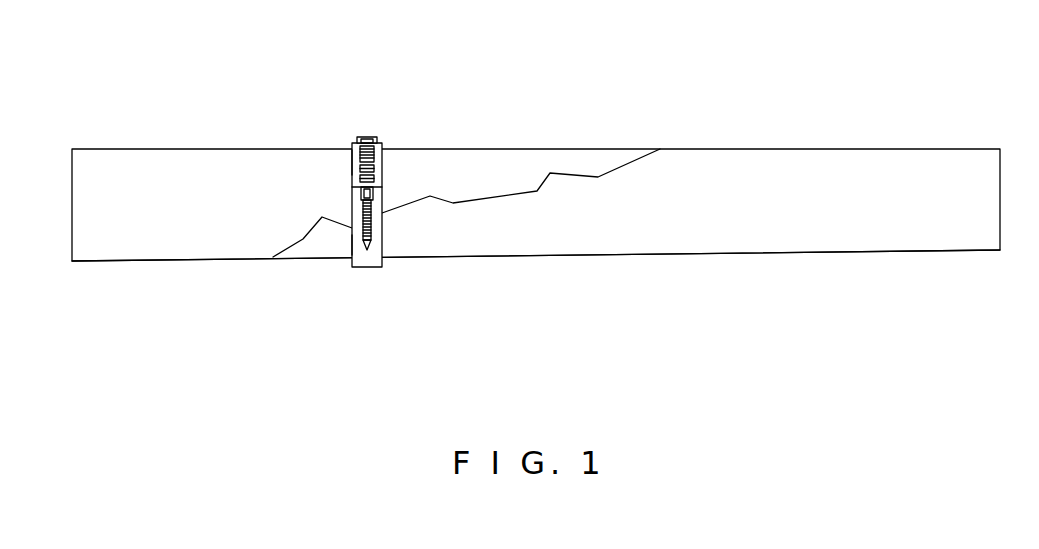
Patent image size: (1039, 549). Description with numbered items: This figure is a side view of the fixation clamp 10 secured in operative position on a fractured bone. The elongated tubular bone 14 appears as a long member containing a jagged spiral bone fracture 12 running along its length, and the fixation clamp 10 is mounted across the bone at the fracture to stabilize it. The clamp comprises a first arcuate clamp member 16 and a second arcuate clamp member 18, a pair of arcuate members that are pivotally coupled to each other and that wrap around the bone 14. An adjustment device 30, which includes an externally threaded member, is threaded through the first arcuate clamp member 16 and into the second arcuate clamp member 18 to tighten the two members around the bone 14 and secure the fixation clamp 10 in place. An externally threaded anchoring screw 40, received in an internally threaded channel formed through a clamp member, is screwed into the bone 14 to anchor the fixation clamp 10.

The fixation clamp 10 is at (400, 113).
The spiral bone fracture 12 is at (622, 166).
The elongated tubular bone 14 is at (782, 178).
The first arcuate clamp member 16 is at (352, 243).
The second arcuate clamp member 18 is at (352, 163).
The adjustment device 30 is at (198, 145).
The anchoring screw 40 is at (382, 242).